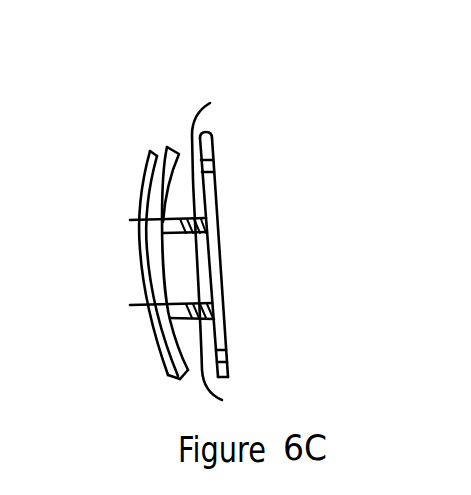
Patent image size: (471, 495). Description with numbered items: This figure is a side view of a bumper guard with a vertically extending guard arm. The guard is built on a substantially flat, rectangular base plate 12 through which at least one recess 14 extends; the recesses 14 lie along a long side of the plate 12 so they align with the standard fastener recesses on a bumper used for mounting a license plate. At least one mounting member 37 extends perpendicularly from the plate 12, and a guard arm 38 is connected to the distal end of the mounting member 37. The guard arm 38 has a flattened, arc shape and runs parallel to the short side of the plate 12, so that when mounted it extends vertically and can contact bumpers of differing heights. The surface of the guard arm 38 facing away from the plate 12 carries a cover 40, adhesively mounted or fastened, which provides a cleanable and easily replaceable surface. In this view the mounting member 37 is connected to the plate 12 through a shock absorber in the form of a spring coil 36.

The base plate 12 is at (218, 247).
The recess 14 is at (213, 172).
The spring coil 36 is at (221, 241).
The mounting member 37 is at (140, 221).
The guard arm 38 is at (167, 146).
The cover 40 is at (147, 177).